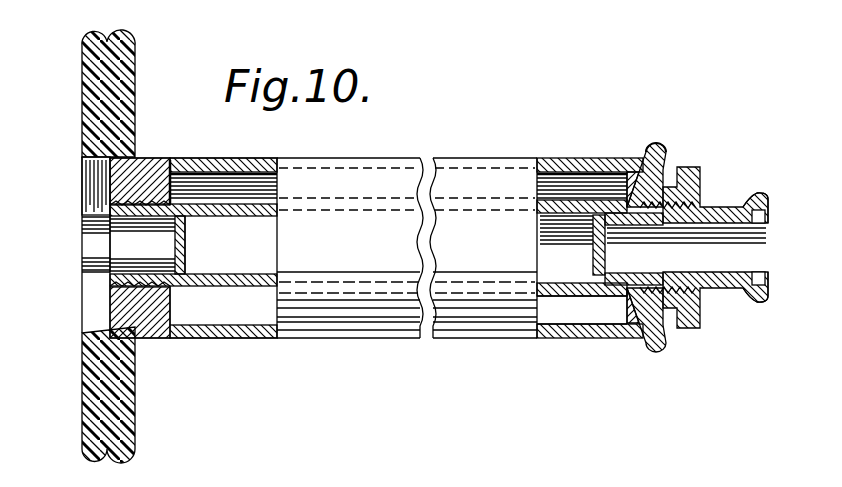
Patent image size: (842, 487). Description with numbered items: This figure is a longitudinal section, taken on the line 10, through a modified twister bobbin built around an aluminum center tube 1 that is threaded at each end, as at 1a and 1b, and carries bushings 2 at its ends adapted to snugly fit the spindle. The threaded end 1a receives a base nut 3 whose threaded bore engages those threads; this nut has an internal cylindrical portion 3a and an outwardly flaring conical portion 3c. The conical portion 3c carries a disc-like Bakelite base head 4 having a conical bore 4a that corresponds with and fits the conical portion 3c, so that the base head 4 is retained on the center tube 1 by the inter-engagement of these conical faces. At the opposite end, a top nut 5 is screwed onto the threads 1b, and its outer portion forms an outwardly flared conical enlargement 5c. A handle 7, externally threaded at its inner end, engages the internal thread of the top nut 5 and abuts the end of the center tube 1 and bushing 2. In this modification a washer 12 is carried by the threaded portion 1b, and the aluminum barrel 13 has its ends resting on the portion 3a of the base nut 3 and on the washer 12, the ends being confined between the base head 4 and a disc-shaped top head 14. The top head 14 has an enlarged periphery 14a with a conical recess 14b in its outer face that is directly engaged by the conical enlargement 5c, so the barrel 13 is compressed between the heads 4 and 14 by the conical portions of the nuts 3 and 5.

The center tube 1 is at (252, 275).
The threaded end 1a is at (142, 292).
The threaded end 1b is at (640, 292).
The bushing 2 is at (156, 257).
The base nut 3 is at (147, 305).
The internal cylindrical portion 3a is at (160, 158).
The conical portion 3c is at (135, 160).
The base head 4 is at (113, 62).
The conical bore 4a is at (86, 153).
The top nut 5 is at (673, 162).
The conical enlargement 5c is at (680, 337).
The handle 7 is at (707, 208).
The section line 10 is at (431, 17).
The washer 12 is at (622, 190).
The barrel 13 is at (457, 161).
The top head 14 is at (647, 153).
The enlarged periphery 14a is at (697, 123).
The conical recess 14b is at (650, 346).